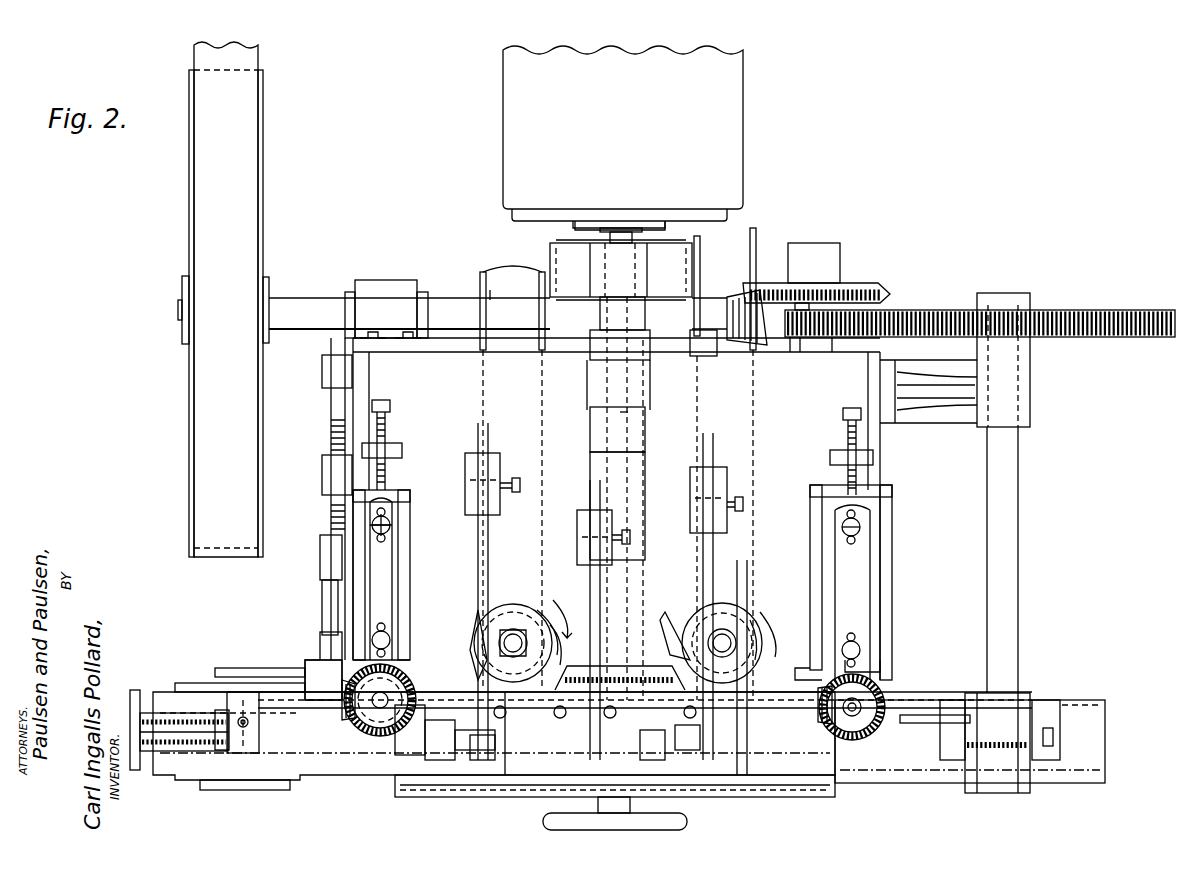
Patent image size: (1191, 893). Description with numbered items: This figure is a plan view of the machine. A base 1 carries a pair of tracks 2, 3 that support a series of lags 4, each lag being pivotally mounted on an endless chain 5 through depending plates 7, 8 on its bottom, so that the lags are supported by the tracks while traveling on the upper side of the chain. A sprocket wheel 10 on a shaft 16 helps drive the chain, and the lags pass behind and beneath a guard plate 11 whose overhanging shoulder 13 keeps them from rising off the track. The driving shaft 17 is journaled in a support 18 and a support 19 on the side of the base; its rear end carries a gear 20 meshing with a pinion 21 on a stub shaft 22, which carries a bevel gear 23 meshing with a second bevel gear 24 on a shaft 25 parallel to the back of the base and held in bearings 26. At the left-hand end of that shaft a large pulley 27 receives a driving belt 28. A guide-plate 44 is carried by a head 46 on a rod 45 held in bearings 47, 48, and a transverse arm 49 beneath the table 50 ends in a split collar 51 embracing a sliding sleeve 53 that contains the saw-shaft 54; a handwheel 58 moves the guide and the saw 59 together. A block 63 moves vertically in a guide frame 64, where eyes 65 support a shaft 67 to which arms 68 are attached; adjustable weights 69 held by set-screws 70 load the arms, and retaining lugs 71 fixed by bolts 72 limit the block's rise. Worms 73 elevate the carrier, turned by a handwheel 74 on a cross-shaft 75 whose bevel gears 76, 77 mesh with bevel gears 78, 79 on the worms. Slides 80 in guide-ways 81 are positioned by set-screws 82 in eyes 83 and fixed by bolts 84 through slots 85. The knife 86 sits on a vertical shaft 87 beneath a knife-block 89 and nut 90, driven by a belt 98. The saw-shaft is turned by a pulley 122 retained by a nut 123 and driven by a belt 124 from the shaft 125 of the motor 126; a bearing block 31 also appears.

The base 1 is at (507, 362).
The track 2 is at (225, 765).
The track 3 is at (200, 690).
The lag 4 is at (300, 690).
The endless chain 5 is at (160, 715).
The depending plate 7 is at (158, 760).
The depending plate 8 is at (136, 700).
The sprocket wheel 10 is at (200, 752).
The guard plate 11 is at (465, 790).
The overhanging shoulder 13 is at (490, 797).
The shaft 16 is at (240, 790).
The driving shaft 17 is at (1012, 530).
The support 18 is at (1028, 692).
The support 19 is at (1025, 418).
The gear 20 is at (930, 312).
The pinion 21 is at (823, 340).
The stub shaft 22 is at (835, 256).
The bevel gear 23 is at (752, 282).
The bevel gear 24 is at (738, 292).
The shaft 25 is at (445, 312).
The bearing 26 is at (382, 290).
The pulley 27 is at (264, 232).
The driving belt 28 is at (257, 66).
The bearing block 31 is at (300, 738).
The guide-plate 44 is at (300, 680).
The rod 45 is at (322, 600).
The head 46 is at (320, 640).
The bearing 47 is at (320, 560).
The bearing 48 is at (322, 372).
The transverse arm 49 is at (322, 475).
The table 50 is at (567, 378).
The split collar 51 is at (630, 461).
The sliding sleeve 53 is at (593, 424).
The saw-shaft 54 is at (640, 415).
The handwheel 58 is at (543, 822).
The saw 59 is at (612, 668).
The block 63 is at (690, 755).
The guide frame 64 is at (670, 760).
The eye 65 is at (430, 760).
The shaft 67 is at (445, 755).
The arm 68 is at (488, 443).
The adjustable weight 69 is at (575, 525).
The set-screw 70 is at (518, 476).
The retaining lug 71 is at (490, 745).
The bolt 72 is at (508, 720).
The worm 73 is at (400, 735).
The handwheel 74 is at (740, 775).
The cross-shaft 75 is at (450, 692).
The bevel gear 76 is at (345, 718).
The bevel gear 77 is at (820, 720).
The bevel gear 78 is at (406, 680).
The bevel gear 79 is at (878, 690).
The slide 80 is at (410, 545).
The guide-way 81 is at (410, 565).
The set-screw 82 is at (386, 428).
The eye 83 is at (400, 446).
The bolt 84 is at (388, 640).
The slot 85 is at (395, 625).
The knife 86 is at (478, 630).
The vertical shaft 87 is at (509, 628).
The knife-block 89 is at (536, 605).
The nut 90 is at (777, 592).
The belt 98 is at (710, 236).
The pulley 122 is at (650, 234).
The nut 123 is at (620, 232).
The belt 124 is at (603, 234).
The shaft 125 is at (632, 230).
The motor 126 is at (525, 126).